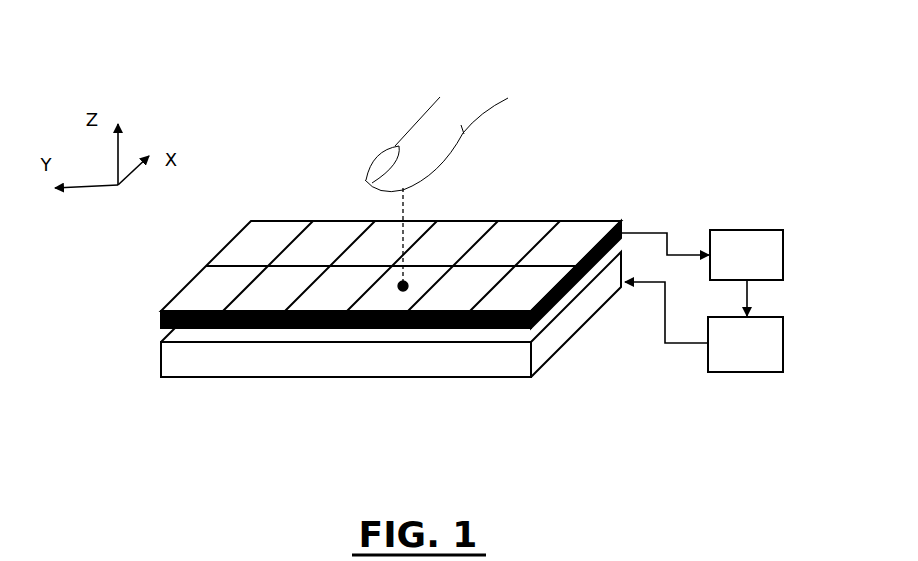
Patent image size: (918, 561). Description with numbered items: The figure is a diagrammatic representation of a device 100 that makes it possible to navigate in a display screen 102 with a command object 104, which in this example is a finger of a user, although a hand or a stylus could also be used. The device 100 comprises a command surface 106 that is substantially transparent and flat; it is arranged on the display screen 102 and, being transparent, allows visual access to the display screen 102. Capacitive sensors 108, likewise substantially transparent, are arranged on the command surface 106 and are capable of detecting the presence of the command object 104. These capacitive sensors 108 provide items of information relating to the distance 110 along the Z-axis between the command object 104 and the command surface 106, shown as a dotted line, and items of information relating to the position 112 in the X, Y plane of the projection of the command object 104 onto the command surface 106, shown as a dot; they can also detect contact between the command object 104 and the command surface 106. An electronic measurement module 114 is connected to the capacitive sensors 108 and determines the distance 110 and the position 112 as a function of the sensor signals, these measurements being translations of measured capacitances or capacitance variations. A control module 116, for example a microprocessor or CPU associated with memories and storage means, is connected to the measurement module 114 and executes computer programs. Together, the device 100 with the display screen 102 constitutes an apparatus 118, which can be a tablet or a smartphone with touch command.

The device 100 is at (661, 196).
The display screen 102 is at (160, 357).
The command object 104 is at (417, 120).
The command surface 106 is at (160, 320).
The capacitive sensors 108 is at (250, 238).
The distance 110 is at (403, 210).
The position 112 is at (398, 291).
The electronic measurement module 114 is at (735, 228).
The control module 116 is at (755, 372).
The apparatus 118 is at (783, 91).